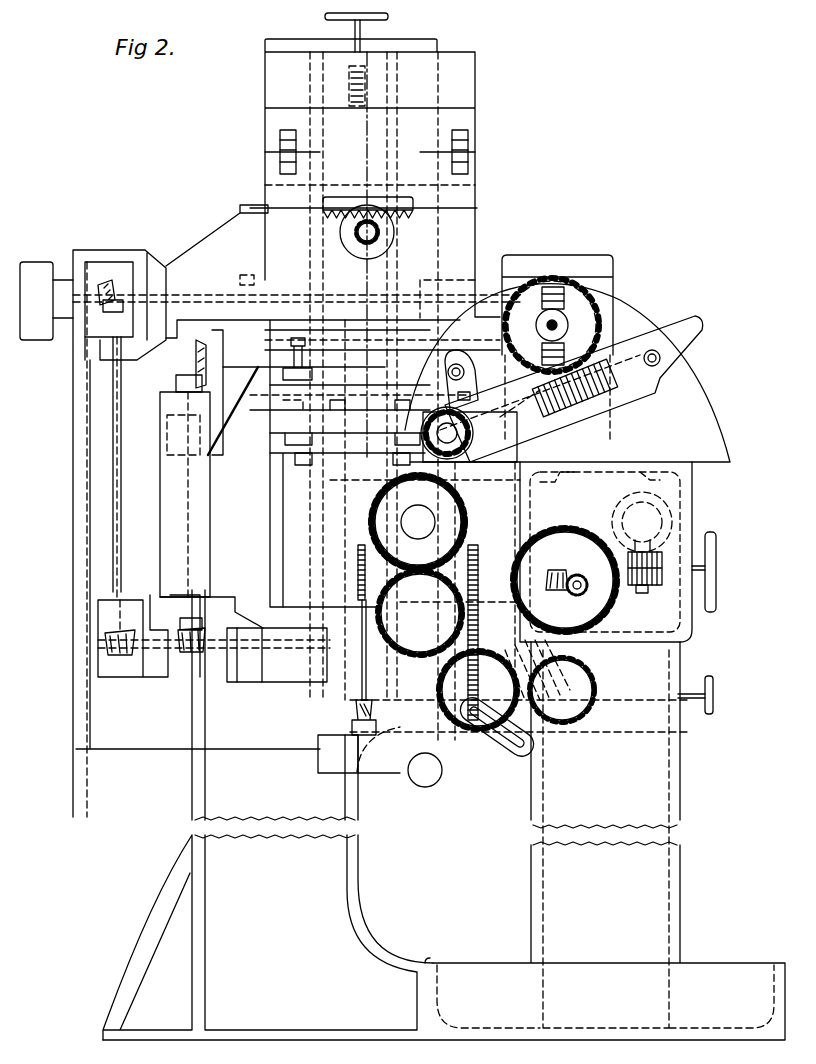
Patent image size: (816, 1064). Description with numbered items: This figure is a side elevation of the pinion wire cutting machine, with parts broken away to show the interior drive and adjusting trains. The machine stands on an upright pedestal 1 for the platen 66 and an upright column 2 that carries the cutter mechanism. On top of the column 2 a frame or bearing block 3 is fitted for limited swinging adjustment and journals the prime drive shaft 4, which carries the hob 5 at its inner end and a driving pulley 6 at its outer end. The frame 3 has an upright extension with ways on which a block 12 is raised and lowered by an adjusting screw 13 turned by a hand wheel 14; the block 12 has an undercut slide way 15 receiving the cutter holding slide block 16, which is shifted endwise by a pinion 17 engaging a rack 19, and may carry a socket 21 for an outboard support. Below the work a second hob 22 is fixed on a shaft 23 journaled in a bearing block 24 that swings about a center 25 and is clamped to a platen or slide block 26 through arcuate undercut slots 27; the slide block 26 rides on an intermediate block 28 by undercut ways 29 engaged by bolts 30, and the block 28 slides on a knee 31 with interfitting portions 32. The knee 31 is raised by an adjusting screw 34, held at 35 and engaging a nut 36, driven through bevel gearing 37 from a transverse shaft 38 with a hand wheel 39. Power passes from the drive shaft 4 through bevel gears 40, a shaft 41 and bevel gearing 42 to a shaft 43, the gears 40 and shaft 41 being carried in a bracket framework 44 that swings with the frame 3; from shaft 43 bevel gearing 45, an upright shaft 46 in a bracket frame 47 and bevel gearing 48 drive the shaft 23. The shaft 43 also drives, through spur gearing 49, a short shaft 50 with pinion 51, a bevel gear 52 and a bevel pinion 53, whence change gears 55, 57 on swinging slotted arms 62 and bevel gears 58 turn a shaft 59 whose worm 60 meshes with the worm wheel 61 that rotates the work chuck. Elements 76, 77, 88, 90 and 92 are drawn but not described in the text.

The upright pedestal 1 is at (683, 862).
The upright column 2 is at (360, 862).
The frame or bearing block 3 is at (478, 184).
The prime drive shaft 4 is at (217, 298).
The hob 5 is at (560, 280).
The driving pulley 6 is at (42, 337).
The block 12 is at (280, 150).
The adjusting screw 13 is at (349, 95).
The hand wheel 14 is at (388, 17).
The undercut slide way 15 is at (248, 272).
The cutter holding slide block 16 is at (222, 222).
The pinion 17 is at (395, 230).
The rack 19 is at (338, 222).
The socket 21 is at (468, 398).
The hob 22 is at (560, 365).
The shaft 23 is at (268, 366).
The bearing block 24 is at (362, 338).
The center 25 is at (475, 375).
The platen or horizontal slide block 26 is at (352, 386).
The arcuate undercut slots 27 is at (312, 372).
The intermediate block 28 is at (272, 412).
The undercut ways 29 is at (330, 405).
The bolts 30 is at (292, 412).
The knee 31 is at (350, 453).
The interfitting portions 32 is at (312, 440).
The adjusting screw 34 is at (362, 668).
The screw bearing 35 is at (333, 773).
The nut 36 is at (358, 566).
The bevel gearing 37 is at (358, 712).
The transverse shaft 38 is at (622, 702).
The hand wheel 39 is at (713, 690).
The bevel gears 40 is at (112, 300).
The shaft 41 is at (121, 400).
The bevel gearing 42 is at (128, 642).
The shaft 43 is at (300, 652).
The bracket framework 44 is at (73, 400).
The bevel gearing 45 is at (198, 654).
The upright shaft 46 is at (185, 494).
The bracket frame 47 is at (228, 413).
The bevel gearing 48 is at (192, 362).
The spur gearing 49 is at (482, 680).
The short shaft 50 is at (480, 575).
The pinion 51 is at (548, 580).
The bevel gear 52 is at (600, 627).
The bevel pinion 53 is at (585, 585).
The change gear 55 is at (560, 660).
The change gear 57 is at (455, 483).
The bevel gears 58 is at (470, 460).
The shaft 59 is at (535, 412).
The worm 60 is at (615, 395).
The worm wheel 61 is at (612, 340).
The swinging slotted arms 62 is at (435, 778).
The platen 66 is at (592, 472).
The worm 76 is at (630, 582).
The bearing 77 is at (612, 518).
The worm wheel 88 is at (628, 505).
The bearing 90 is at (643, 593).
The knob 92 is at (716, 575).